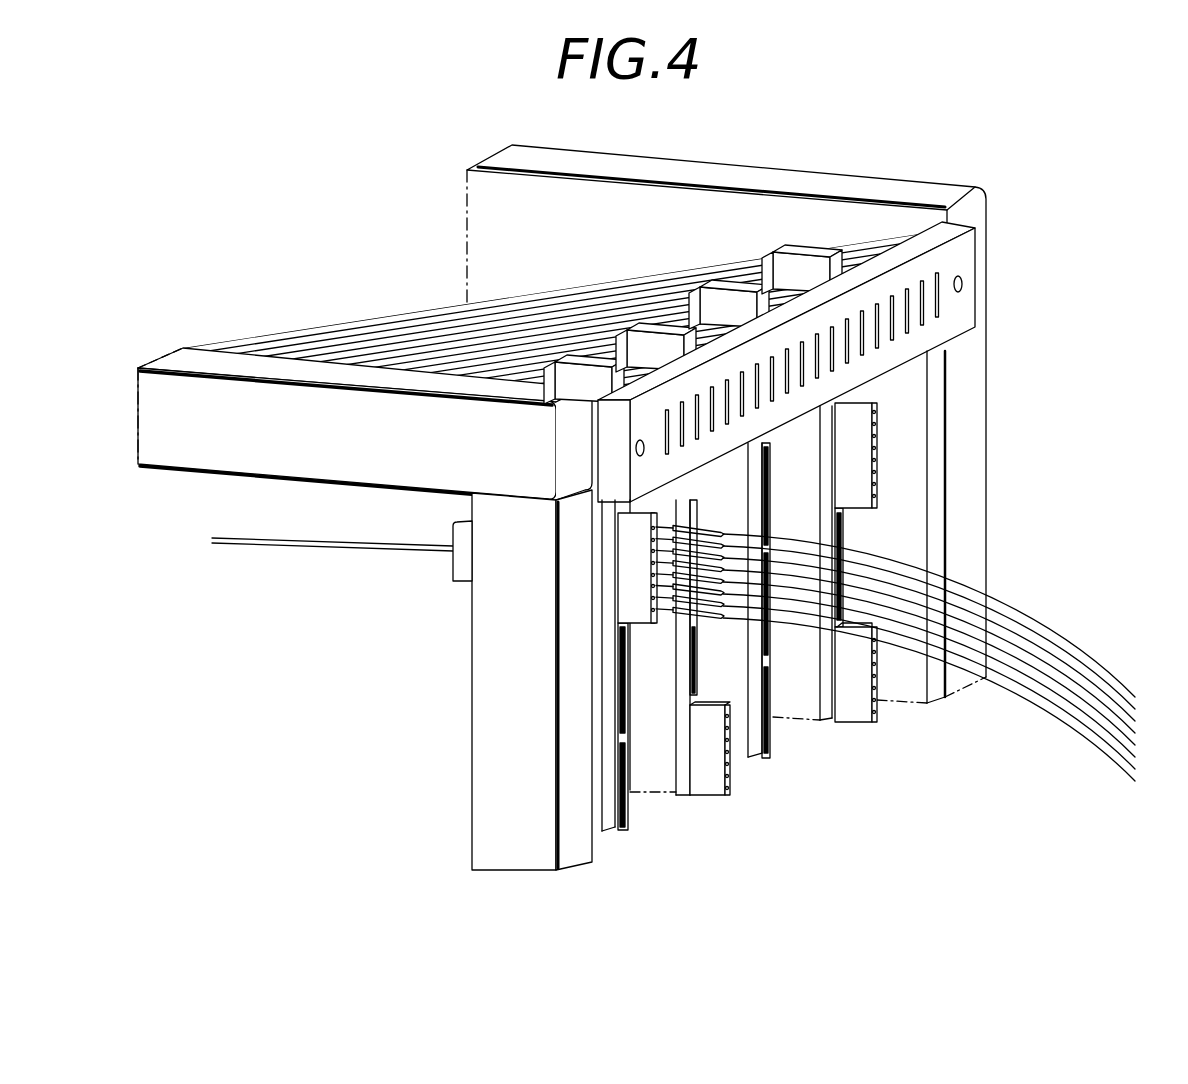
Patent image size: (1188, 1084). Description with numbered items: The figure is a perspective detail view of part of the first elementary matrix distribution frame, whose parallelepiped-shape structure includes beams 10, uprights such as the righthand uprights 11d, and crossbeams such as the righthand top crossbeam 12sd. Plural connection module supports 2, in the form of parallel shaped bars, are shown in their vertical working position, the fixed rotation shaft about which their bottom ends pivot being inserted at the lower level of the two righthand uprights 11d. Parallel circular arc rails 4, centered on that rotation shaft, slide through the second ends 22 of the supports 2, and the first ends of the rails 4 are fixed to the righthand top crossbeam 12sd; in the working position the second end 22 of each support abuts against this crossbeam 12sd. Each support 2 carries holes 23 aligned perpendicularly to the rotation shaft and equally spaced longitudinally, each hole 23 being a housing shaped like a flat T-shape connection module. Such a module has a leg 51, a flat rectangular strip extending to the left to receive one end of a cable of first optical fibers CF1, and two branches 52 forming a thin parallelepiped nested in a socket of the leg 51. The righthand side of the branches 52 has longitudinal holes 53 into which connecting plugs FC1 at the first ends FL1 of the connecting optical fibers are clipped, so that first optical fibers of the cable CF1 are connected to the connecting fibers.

The beam 10 is at (680, 167).
The circular arc rail 4 is at (368, 322).
The second end of the support 22 is at (800, 247).
The righthand top crossbeam 12sd is at (975, 252).
The righthand upright 11d is at (975, 507).
The connection module support 2 is at (662, 772).
The hole 23 is at (768, 735).
The branches of the T-shape profile 52 is at (862, 418).
The longitudinal hole 53 is at (878, 712).
The connecting plug FC1 is at (702, 527).
The first end of the connecting optical fiber FL1 is at (1052, 642).
The cable of first optical fibers CF1 is at (372, 550).
The leg of the Tee 51 is at (456, 568).